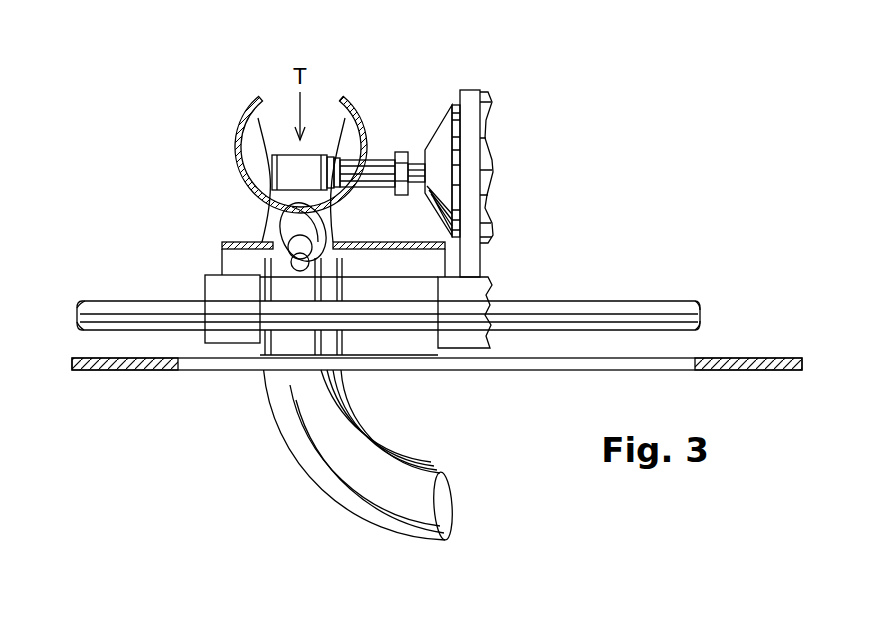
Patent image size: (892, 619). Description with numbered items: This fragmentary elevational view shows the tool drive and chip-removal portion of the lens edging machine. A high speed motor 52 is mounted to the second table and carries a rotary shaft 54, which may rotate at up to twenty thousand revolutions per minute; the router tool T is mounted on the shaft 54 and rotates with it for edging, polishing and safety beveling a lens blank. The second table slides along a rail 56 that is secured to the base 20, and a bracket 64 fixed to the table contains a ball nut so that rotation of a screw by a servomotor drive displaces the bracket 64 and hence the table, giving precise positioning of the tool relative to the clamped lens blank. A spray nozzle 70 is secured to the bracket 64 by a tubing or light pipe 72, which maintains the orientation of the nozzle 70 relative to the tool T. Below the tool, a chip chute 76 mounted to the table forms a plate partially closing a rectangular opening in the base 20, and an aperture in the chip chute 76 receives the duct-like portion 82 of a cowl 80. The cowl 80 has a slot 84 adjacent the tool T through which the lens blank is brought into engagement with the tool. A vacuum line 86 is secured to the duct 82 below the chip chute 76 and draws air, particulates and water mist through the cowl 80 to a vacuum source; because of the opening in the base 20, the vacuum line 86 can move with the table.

The base 20 is at (737, 358).
The high speed motor 52 is at (490, 140).
The rotary shaft 54 is at (420, 158).
The rail 56 is at (115, 303).
The bracket 64 is at (482, 290).
The spray nozzle 70 is at (290, 230).
The tubing or light pipe 72 is at (298, 250).
The chip chute 76 is at (362, 242).
The cowl 80 is at (238, 133).
The duct-like portion 82 is at (270, 213).
The slot 84 is at (346, 120).
The vacuum line 86 is at (387, 450).